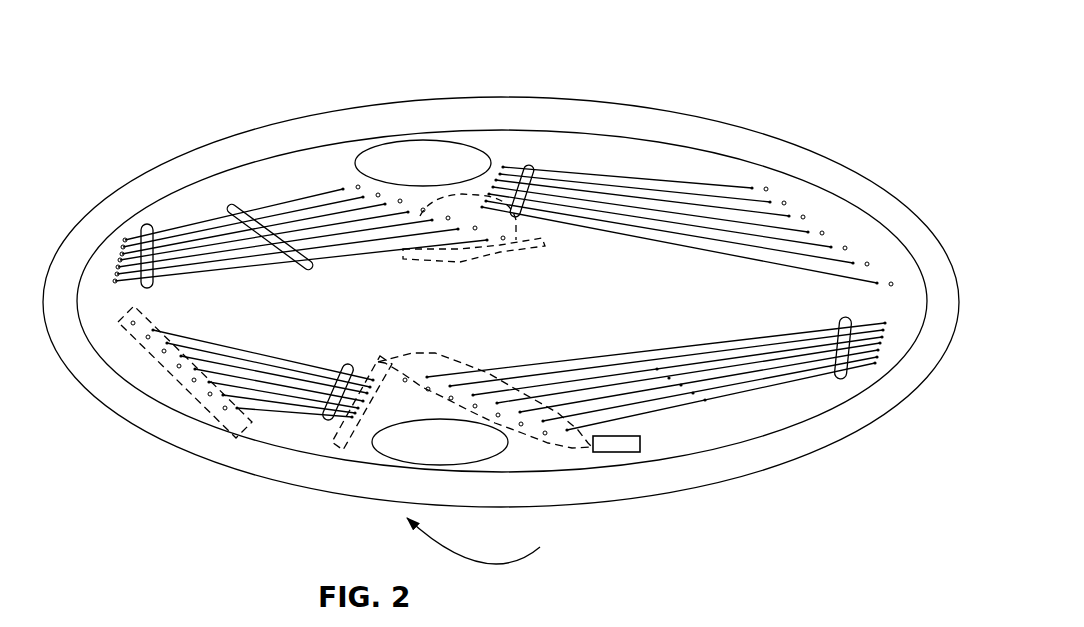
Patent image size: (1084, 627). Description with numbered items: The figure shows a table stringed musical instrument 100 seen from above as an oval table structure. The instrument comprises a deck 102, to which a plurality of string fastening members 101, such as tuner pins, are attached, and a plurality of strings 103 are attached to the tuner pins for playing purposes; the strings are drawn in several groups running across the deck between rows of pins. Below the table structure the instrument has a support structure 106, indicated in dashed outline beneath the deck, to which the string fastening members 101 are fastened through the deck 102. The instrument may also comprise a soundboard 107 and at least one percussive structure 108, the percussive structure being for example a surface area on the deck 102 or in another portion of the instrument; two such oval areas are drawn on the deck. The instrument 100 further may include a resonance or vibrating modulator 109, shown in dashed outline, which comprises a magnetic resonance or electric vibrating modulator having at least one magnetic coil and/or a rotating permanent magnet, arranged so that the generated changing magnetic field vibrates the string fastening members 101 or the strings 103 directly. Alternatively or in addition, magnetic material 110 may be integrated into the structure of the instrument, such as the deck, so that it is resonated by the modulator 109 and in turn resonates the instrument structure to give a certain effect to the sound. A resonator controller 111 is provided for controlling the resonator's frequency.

The table stringed musical instrument 100 is at (346, 77).
The string fastening members 101 is at (403, 352).
The deck 102 is at (207, 173).
The strings 103 is at (680, 186).
The support structure 106 is at (193, 393).
The soundboard 107 is at (498, 541).
The percussive structure 108 is at (431, 302).
The resonance or vibrating modulator 109 is at (460, 262).
The magnetic material 110 is at (537, 243).
The resonator controller 111 is at (633, 452).